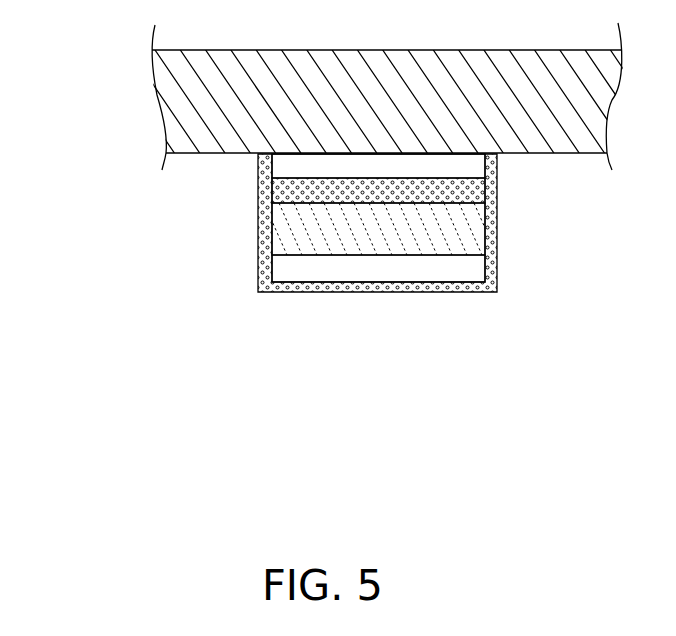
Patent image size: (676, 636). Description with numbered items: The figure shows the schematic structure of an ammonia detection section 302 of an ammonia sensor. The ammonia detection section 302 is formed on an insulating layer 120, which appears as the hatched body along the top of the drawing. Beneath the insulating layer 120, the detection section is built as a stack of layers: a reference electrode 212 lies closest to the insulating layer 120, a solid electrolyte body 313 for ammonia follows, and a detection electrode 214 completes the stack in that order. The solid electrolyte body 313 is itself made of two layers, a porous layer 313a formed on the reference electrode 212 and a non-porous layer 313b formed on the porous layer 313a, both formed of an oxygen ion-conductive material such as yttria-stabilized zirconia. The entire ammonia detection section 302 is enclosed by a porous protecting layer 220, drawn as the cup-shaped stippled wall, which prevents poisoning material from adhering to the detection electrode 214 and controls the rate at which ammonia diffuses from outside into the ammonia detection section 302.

The insulating layer 120 is at (545, 142).
The protecting layer 220 is at (395, 288).
The ammonia detection section 302 is at (248, 244).
The reference electrode 212 is at (272, 165).
The solid electrolyte body for ammonia 313 is at (282, 237).
The porous layer 313a is at (272, 190).
The non-porous layer 313b is at (272, 230).
The detection electrode 214 is at (272, 268).